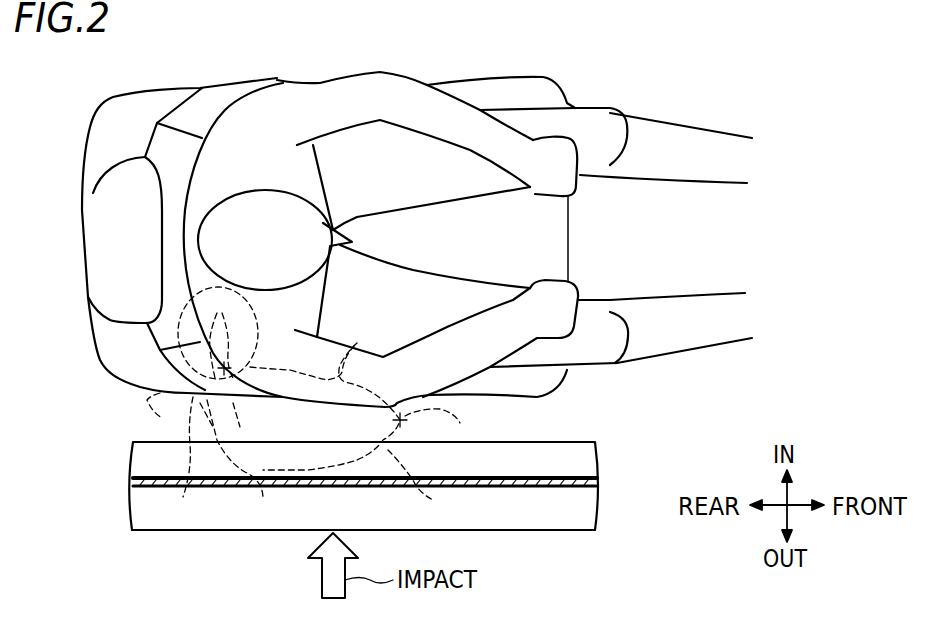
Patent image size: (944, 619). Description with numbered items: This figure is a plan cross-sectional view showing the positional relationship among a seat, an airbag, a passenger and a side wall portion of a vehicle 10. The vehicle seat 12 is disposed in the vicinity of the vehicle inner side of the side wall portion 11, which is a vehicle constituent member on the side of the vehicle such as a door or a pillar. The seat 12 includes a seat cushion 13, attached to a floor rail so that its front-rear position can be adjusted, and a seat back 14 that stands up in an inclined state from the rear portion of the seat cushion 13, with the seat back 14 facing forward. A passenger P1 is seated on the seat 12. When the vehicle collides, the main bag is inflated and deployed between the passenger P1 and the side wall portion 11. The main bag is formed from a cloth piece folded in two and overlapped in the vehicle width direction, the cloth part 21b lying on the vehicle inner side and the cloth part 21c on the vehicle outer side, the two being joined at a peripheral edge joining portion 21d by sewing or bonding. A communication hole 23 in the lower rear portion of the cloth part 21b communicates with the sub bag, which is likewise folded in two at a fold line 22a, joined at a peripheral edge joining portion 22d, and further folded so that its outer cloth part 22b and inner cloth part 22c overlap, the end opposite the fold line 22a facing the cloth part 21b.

The vehicle 10 is at (363, 525).
The side wall portion 11 is at (148, 532).
The vehicle seat 12 is at (117, 403).
The seat cushion 13 is at (555, 240).
The seat back 14 is at (112, 148).
The passenger P1 is at (182, 240).
The cloth part 21b is at (365, 340).
The cloth part 21c is at (433, 500).
The peripheral edge joining portion 21d is at (460, 423).
The fold line 22a is at (145, 417).
The cloth part 22b is at (173, 333).
The cloth part 22c is at (185, 463).
The peripheral edge joining portion 22d is at (247, 464).
The communication hole 23 is at (250, 405).